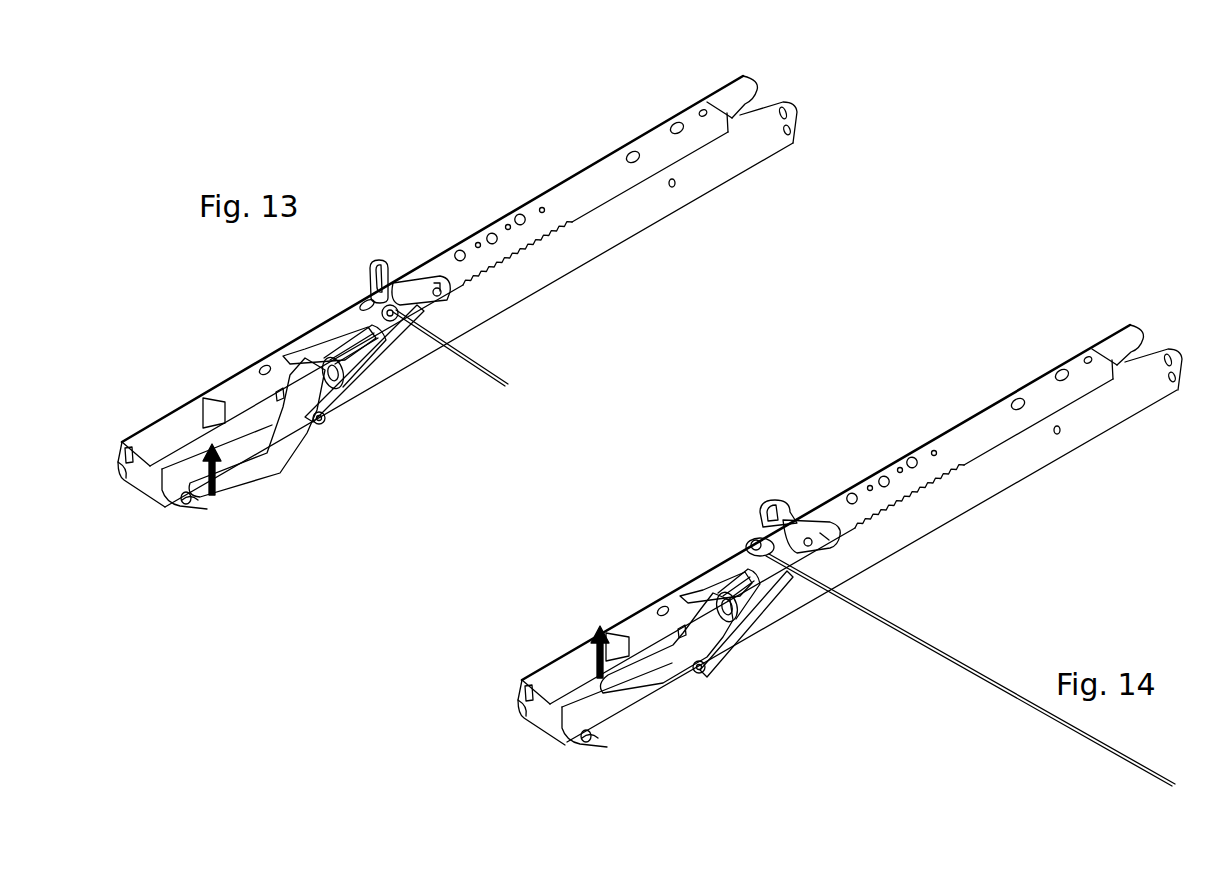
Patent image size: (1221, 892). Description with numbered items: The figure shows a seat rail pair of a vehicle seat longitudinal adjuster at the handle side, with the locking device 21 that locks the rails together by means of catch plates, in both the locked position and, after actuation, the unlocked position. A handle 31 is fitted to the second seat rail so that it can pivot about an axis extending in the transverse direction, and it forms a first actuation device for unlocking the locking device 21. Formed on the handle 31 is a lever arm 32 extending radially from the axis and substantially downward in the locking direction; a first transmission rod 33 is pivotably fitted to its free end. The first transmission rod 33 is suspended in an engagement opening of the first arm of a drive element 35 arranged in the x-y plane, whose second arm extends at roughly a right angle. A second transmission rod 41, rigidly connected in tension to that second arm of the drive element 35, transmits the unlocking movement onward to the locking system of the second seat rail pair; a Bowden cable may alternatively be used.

In FIG. 13, the locking device 21 is at (565, 342).
In FIG. 14, the locking device 21 is at (974, 565).
In FIG. 13, the handle 31 is at (222, 485).
In FIG. 14, the handle 31 is at (645, 675).
In FIG. 13, the lever arm 32 is at (323, 425).
In FIG. 14, the lever arm 32 is at (702, 671).
In FIG. 13, the first transmission rod 33 is at (358, 392).
In FIG. 14, the first transmission rod 33 is at (743, 630).
In FIG. 13, the drive element 35 is at (393, 293).
In FIG. 14, the drive element 35 is at (778, 537).
In FIG. 13, the second transmission rod 41 is at (498, 395).
In FIG. 14, the second transmission rod 41 is at (950, 662).